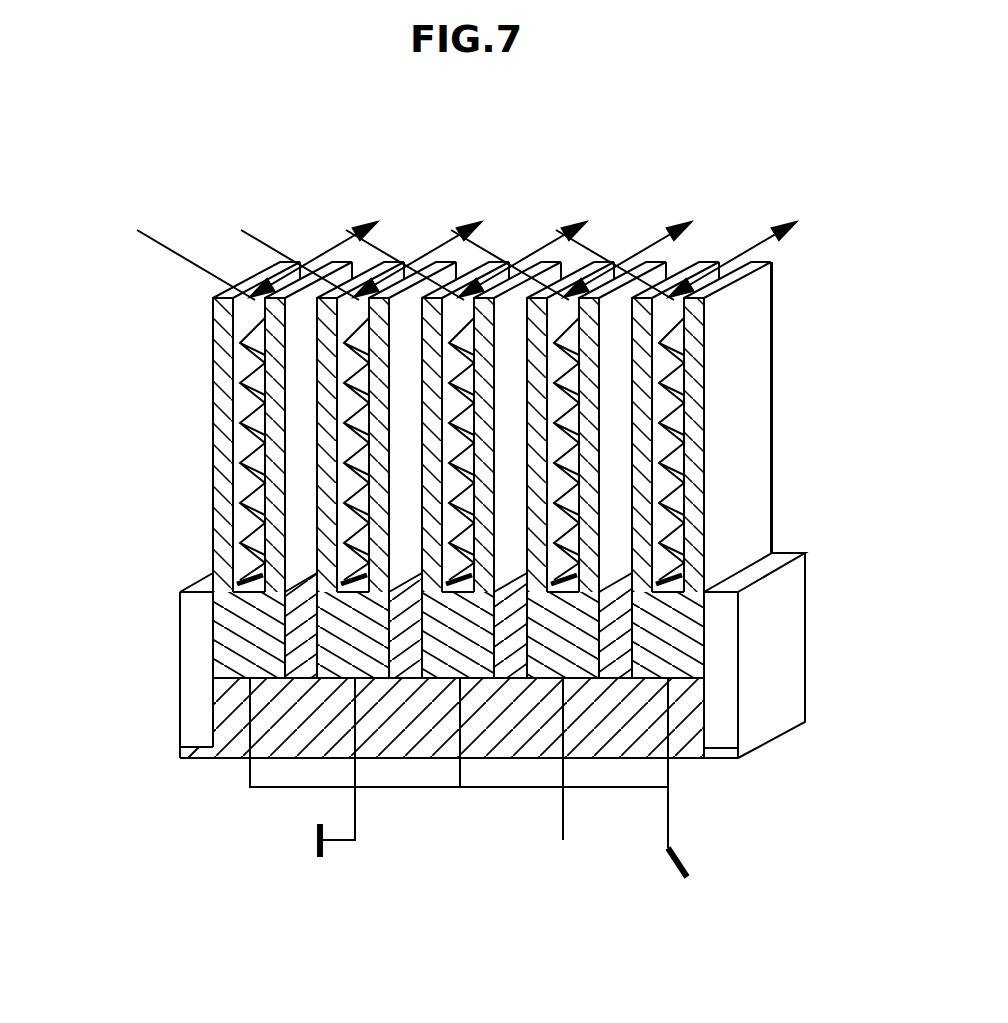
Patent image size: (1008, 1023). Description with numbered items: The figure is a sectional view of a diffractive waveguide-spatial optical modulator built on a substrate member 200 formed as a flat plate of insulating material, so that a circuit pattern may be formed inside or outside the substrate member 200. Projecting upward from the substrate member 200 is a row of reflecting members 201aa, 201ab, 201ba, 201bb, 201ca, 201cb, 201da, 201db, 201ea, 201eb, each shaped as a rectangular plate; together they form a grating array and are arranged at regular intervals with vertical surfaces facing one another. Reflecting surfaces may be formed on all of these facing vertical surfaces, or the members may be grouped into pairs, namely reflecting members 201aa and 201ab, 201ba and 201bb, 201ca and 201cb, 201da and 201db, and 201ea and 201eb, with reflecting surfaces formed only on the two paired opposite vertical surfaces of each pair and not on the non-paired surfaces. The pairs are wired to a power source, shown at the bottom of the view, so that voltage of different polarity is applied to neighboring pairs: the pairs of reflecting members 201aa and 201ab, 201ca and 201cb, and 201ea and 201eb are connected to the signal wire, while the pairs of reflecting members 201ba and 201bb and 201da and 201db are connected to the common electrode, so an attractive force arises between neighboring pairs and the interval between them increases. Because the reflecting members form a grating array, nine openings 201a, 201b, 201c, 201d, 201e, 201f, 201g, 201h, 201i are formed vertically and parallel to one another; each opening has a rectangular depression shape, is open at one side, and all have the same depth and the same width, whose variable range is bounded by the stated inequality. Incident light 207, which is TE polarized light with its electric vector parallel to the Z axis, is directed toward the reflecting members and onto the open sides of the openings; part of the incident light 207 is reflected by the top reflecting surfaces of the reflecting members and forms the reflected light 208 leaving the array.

The substrate member 200 is at (705, 706).
The incident light 207 is at (147, 238).
The reflected light 208 is at (765, 243).
The opening 201a is at (243, 328).
The opening 201b is at (300, 366).
The opening 201c is at (348, 405).
The opening 201d is at (407, 444).
The opening 201e is at (455, 482).
The opening 201f is at (510, 520).
The opening 201g is at (570, 335).
The opening 201h is at (617, 370).
The opening 201i is at (662, 407).
The reflecting member 201aa is at (223, 312).
The reflecting member 201ab is at (277, 312).
The reflecting member 201ba is at (333, 312).
The reflecting member 201bb is at (379, 312).
The reflecting member 201ca is at (437, 312).
The reflecting member 201cb is at (487, 312).
The reflecting member 201da is at (548, 312).
The reflecting member 201db is at (590, 310).
The reflecting member 201ea is at (642, 312).
The reflecting member 201eb is at (695, 310).